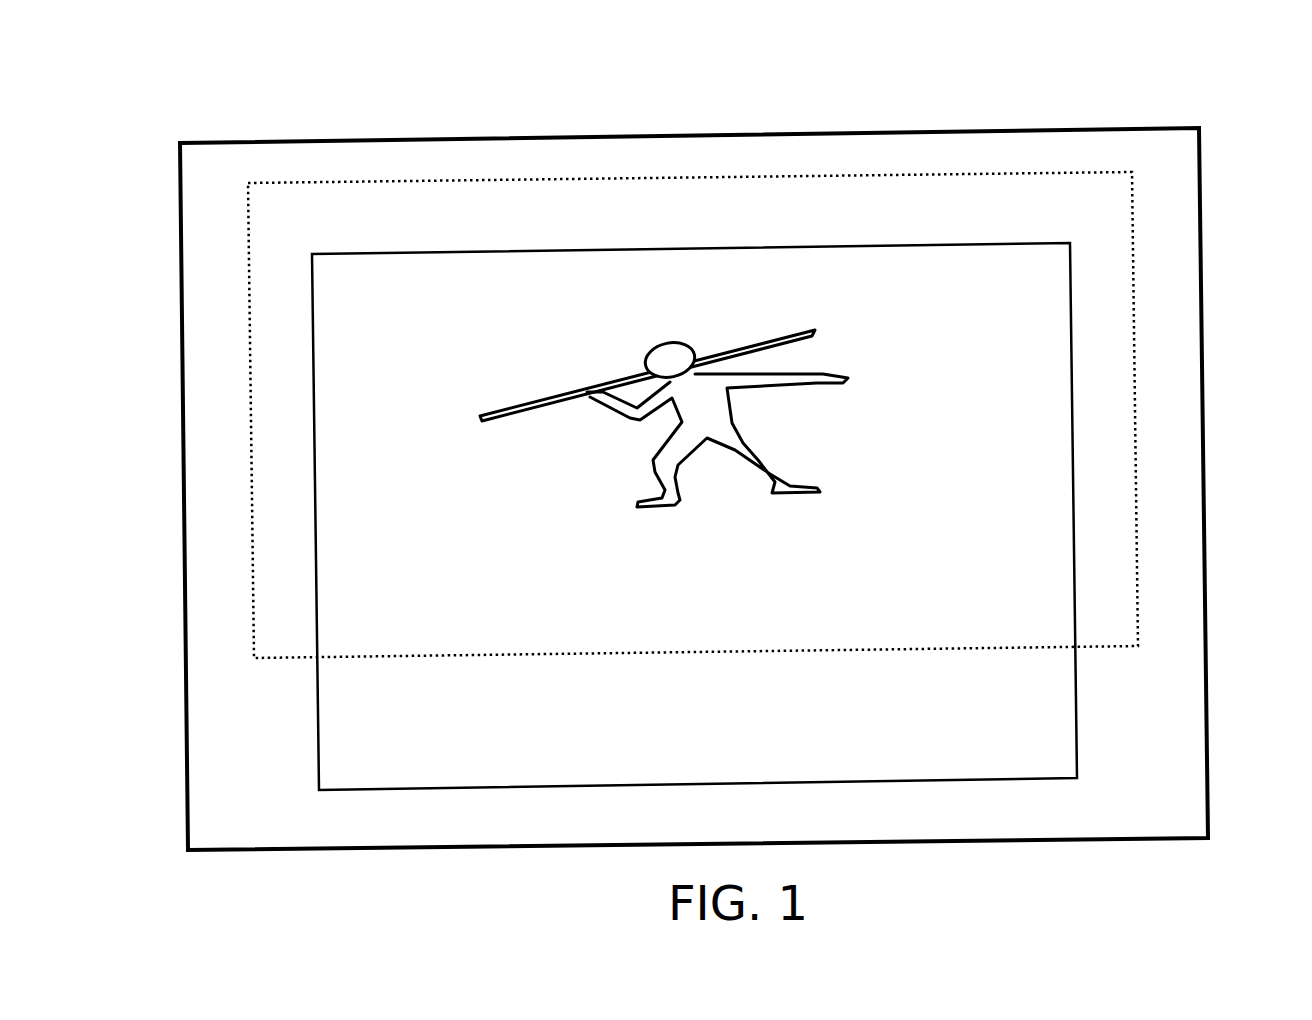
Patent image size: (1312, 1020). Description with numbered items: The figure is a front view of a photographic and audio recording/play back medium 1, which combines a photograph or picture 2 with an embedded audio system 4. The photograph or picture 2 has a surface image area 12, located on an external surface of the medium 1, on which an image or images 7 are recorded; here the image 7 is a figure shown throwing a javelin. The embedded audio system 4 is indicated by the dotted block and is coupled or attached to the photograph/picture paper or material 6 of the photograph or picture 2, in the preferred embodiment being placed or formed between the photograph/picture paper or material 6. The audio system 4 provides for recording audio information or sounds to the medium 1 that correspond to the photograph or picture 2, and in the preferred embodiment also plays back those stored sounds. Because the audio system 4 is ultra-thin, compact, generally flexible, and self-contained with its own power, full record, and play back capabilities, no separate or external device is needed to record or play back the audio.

The photographic and audio recording/play back medium 1 is at (734, 445).
The photograph or picture 2 is at (1075, 125).
The embedded audio system 4 is at (1100, 652).
The photograph/picture paper or material 6 is at (450, 150).
The images 7 is at (677, 343).
The surface image area 12 is at (1020, 764).